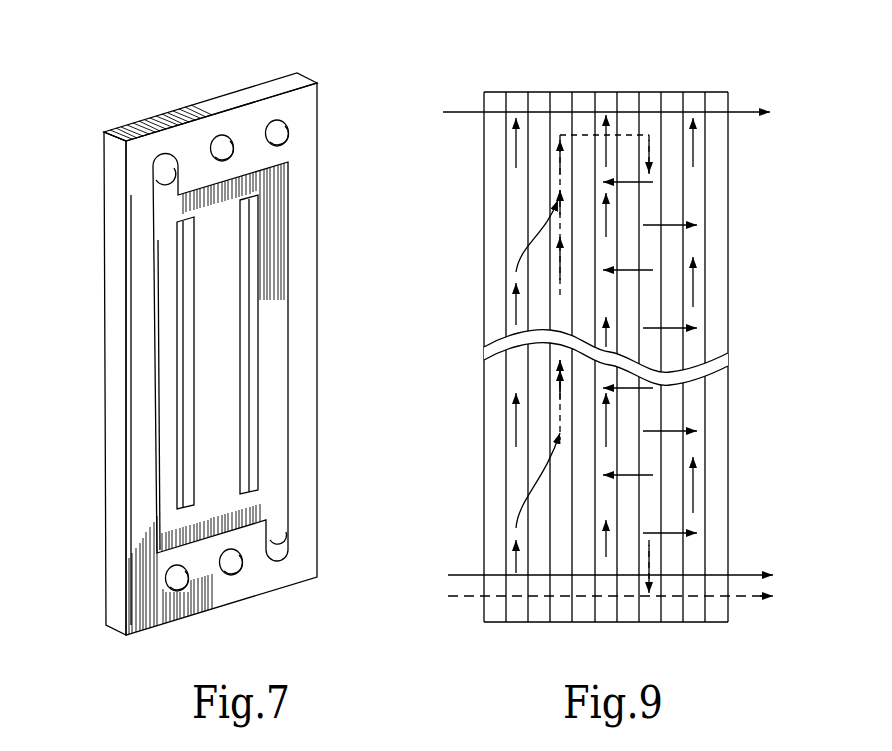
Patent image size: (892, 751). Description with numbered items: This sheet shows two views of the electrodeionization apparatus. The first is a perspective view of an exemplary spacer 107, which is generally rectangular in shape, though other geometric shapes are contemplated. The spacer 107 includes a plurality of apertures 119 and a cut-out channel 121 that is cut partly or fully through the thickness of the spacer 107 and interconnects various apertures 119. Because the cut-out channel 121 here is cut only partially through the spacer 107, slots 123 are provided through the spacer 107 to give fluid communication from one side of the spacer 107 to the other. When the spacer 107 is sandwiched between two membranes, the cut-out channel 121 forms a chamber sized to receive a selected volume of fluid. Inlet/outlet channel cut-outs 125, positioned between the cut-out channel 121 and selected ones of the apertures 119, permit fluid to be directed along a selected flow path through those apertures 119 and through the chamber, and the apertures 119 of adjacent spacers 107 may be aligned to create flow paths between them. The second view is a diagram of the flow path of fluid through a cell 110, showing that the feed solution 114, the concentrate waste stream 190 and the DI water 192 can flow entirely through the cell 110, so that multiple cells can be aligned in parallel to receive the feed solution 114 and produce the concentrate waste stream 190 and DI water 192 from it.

In FIG. 7, the spacer 107 is at (338, 89).
In FIG. 7, the apertures 119 is at (203, 138).
In FIG. 7, the cut-out channel 121 is at (222, 355).
In FIG. 7, the slots 123 is at (260, 217).
In FIG. 7, the inlet/outlet channel cut-outs 125 is at (167, 200).
In FIG. 9, the cell 110 is at (737, 239).
In FIG. 9, the concentrate waste stream 190 is at (738, 111).
In FIG. 9, the feed solution 114 is at (462, 574).
In FIG. 9, the DI water 192 is at (733, 597).